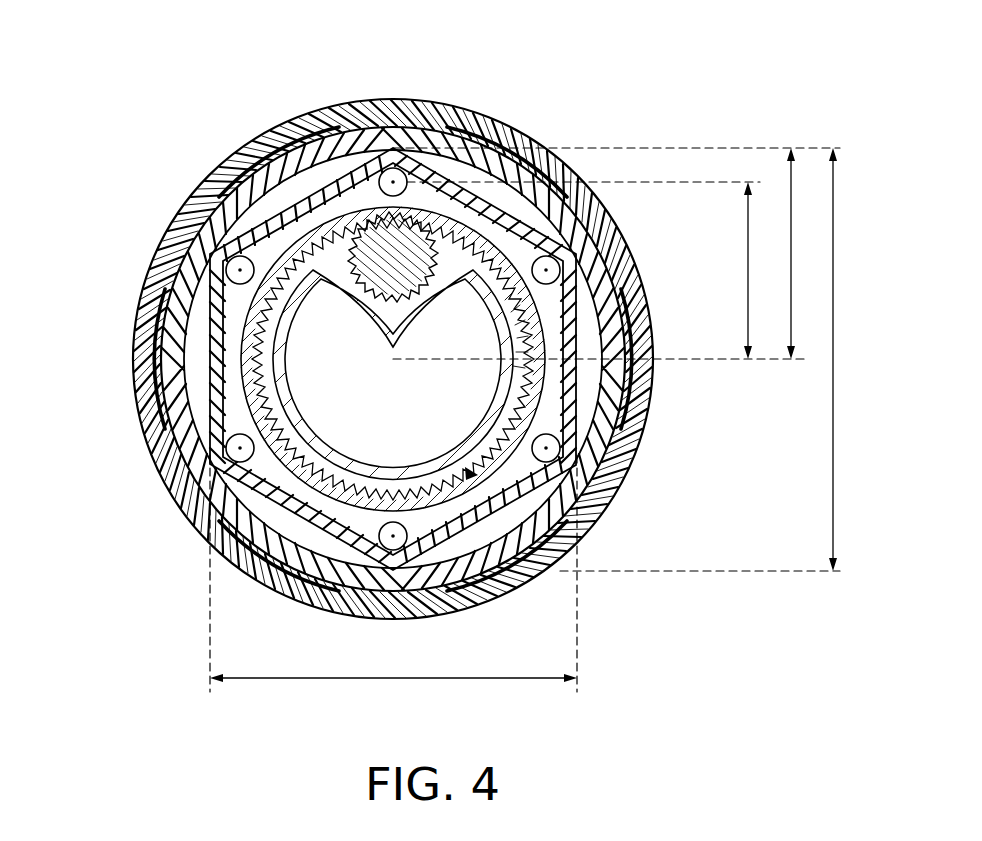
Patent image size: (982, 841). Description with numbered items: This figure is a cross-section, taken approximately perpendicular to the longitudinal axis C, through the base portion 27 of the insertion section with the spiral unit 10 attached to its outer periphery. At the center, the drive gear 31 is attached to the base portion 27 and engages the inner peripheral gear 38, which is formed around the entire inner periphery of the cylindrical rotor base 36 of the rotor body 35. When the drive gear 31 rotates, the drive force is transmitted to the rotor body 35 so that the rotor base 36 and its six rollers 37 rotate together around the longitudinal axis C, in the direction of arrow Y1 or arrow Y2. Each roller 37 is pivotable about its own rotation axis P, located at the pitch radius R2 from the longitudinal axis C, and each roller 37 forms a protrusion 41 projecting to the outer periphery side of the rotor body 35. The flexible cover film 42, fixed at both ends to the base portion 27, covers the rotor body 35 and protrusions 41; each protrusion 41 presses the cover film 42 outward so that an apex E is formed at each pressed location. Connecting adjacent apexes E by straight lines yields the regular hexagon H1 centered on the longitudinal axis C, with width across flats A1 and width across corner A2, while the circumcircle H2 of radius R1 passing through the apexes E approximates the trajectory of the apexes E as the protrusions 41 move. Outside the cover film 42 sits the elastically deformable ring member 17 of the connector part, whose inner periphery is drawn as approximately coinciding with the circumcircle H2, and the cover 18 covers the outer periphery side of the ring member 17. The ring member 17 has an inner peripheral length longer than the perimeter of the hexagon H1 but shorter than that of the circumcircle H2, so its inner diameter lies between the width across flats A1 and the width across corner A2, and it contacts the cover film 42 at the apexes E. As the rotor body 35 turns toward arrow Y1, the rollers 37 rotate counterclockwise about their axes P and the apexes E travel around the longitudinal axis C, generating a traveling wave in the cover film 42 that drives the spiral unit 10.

The spiral unit 10 is at (551, 92).
The ring member 17 is at (640, 343).
The cover 18 is at (463, 124).
The base portion 27 is at (326, 467).
The drive gear 31 is at (372, 290).
The rotor body 35 is at (466, 473).
The rotor base 36 is at (397, 497).
The rollers 37 is at (233, 252).
The inner peripheral gear 38 is at (508, 337).
The protrusions 41 is at (403, 170).
The cover film 42 is at (490, 512).
The longitudinal axis C is at (393, 362).
The apex E is at (393, 168).
The rotation axis P is at (382, 170).
The hexagon H1 is at (212, 325).
The circumcircle H2 is at (248, 173).
The radius R1 is at (616, 253).
The pitch radius R2 is at (593, 270).
The width across flats A1 is at (393, 582).
The width across corner A2 is at (716, 359).
The arrow Y1 is at (519, 60).
The arrow Y2 is at (342, 23).